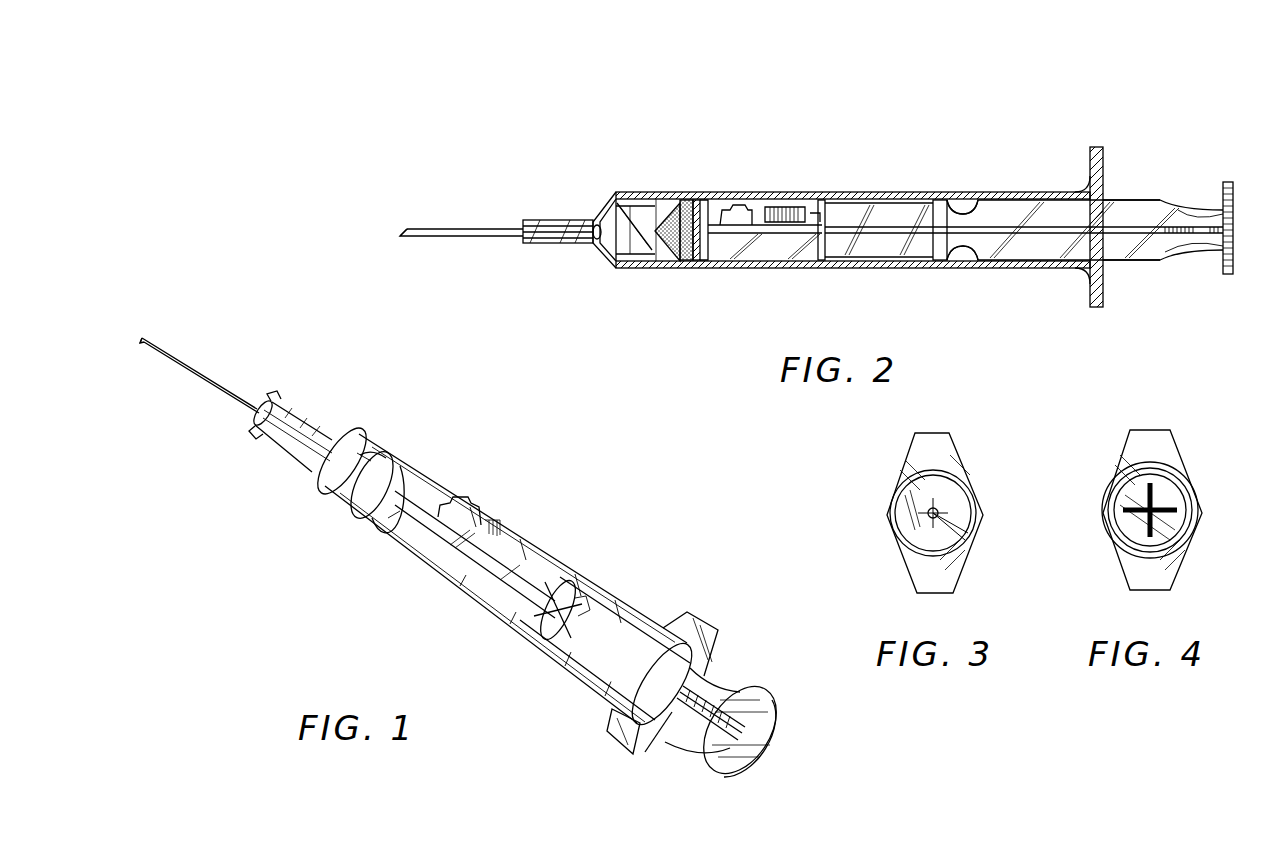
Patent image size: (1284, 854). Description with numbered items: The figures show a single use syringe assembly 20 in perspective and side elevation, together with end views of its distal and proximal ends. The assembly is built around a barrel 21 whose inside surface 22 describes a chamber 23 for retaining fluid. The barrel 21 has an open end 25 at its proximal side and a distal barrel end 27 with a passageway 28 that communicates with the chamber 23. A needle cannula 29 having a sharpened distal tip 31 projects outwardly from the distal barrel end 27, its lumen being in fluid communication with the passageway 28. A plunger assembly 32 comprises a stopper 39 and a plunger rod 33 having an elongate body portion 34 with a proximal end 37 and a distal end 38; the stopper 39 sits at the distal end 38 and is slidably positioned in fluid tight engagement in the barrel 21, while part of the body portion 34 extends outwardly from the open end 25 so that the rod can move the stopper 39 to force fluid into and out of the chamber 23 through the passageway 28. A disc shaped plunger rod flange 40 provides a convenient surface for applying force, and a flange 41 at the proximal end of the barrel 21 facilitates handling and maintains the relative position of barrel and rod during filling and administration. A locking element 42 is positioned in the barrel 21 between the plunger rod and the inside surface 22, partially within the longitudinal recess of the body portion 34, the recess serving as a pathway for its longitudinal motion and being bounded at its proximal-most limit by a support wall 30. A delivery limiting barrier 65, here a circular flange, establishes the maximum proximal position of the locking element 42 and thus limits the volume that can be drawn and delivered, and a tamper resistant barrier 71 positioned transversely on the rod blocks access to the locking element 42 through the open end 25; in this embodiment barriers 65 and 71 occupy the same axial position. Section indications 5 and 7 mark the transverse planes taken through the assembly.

In FIG. 2, the syringe assembly 20 is at (672, 170).
In FIG. 1, the syringe assembly 20 is at (484, 450).
In FIG. 3, the syringe assembly 20 is at (870, 463).
In FIG. 4, the syringe assembly 20 is at (1213, 456).
In FIG. 2, the barrel 21 is at (662, 268).
In FIG. 1, the barrel 21 is at (332, 512).
In FIG. 2, the inside surface 22 is at (638, 256).
In FIG. 1, the inside surface 22 is at (378, 461).
In FIG. 2, the chamber 23 is at (625, 252).
In FIG. 2, the open end 25 is at (1106, 192).
In FIG. 2, the distal barrel end 27 is at (627, 192).
In FIG. 1, the distal barrel end 27 is at (342, 461).
In FIG. 3, the distal barrel end 27 is at (893, 500).
In FIG. 2, the passageway 28 is at (592, 244).
In FIG. 2, the needle cannula 29 is at (440, 229).
In FIG. 1, the needle cannula 29 is at (208, 378).
In FIG. 3, the needle cannula 29 is at (928, 515).
In FIG. 2, the support wall 30 is at (712, 250).
In FIG. 2, the sharpened distal tip 31 is at (403, 233).
In FIG. 1, the sharpened distal tip 31 is at (141, 340).
In FIG. 2, the plunger assembly 32 is at (1140, 261).
In FIG. 1, the plunger assembly 32 is at (666, 742).
In FIG. 1, the plunger rod 33 is at (568, 574).
In FIG. 2, the elongate body portion 34 is at (1022, 250).
In FIG. 1, the elongate body portion 34 is at (611, 655).
In FIG. 1, the proximal end 37 is at (738, 696).
In FIG. 1, the distal end 38 is at (408, 548).
In FIG. 2, the stopper 39 is at (683, 205).
In FIG. 1, the stopper 39 is at (362, 522).
In FIG. 2, the plunger rod flange 40 is at (1236, 272).
In FIG. 1, the plunger rod flange 40 is at (776, 752).
In FIG. 4, the plunger rod flange 40 is at (1192, 482).
In FIG. 1, the flange 41 is at (702, 624).
In FIG. 3, the flange 41 is at (915, 578).
In FIG. 4, the flange 41 is at (1165, 576).
In FIG. 2, the locking element 42 is at (748, 205).
In FIG. 1, the locking element 42 is at (470, 506).
In FIG. 2, the delivery limiting barrier 65 is at (935, 205).
In FIG. 2, the tamper resistant barrier 71 is at (935, 256).
In FIG. 2, the section line 5- 5 is at (822, 188).
In FIG. 2, the section line 7- 7 is at (960, 188).